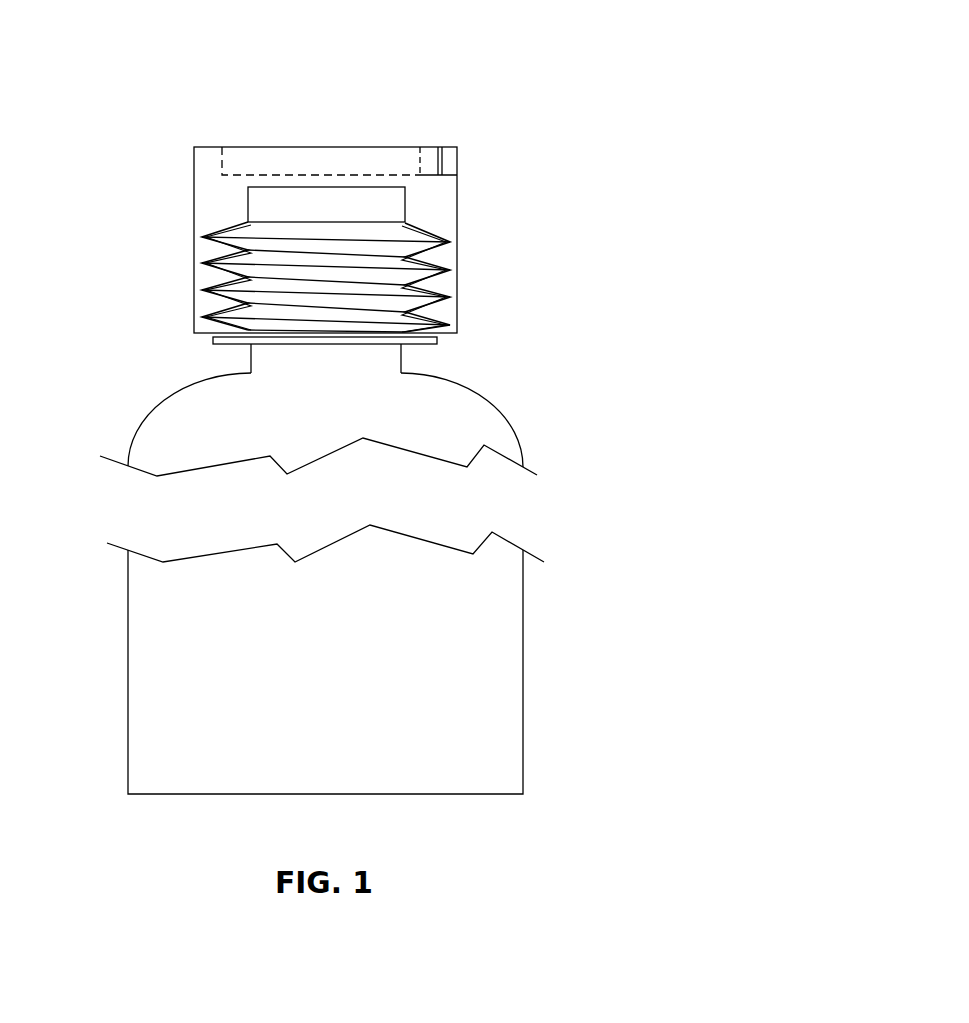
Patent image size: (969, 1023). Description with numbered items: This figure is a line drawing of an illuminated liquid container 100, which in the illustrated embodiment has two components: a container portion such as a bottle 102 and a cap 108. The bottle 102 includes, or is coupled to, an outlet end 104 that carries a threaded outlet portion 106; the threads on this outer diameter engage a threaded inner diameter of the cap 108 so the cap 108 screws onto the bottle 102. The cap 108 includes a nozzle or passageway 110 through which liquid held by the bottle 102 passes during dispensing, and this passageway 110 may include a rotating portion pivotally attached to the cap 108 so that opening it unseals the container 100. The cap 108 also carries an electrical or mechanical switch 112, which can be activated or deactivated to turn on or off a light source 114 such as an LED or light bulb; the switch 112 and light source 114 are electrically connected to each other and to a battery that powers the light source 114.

The illuminated liquid container 100 is at (519, 29).
The bottle 102 is at (536, 668).
The outlet end 104 is at (546, 282).
The threaded outlet portion 106 is at (237, 298).
The cap 108 is at (214, 195).
The passageway 110 is at (224, 138).
The switch 112 is at (447, 162).
The light source 114 is at (428, 150).